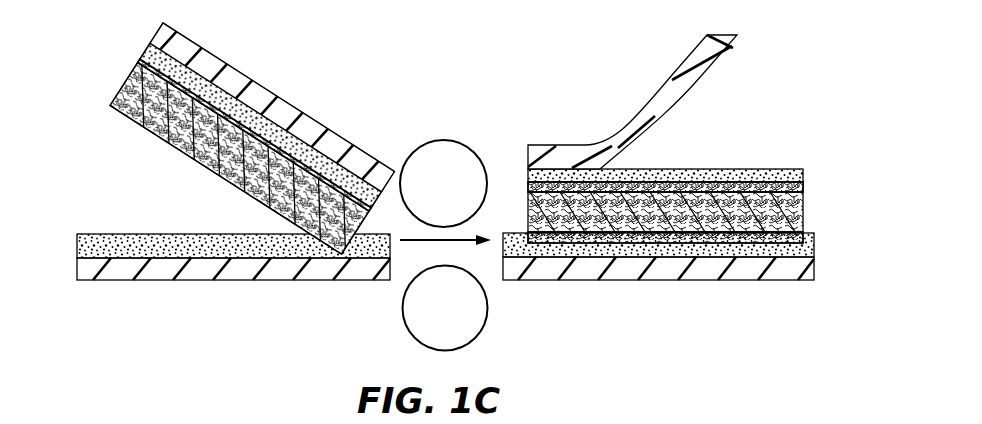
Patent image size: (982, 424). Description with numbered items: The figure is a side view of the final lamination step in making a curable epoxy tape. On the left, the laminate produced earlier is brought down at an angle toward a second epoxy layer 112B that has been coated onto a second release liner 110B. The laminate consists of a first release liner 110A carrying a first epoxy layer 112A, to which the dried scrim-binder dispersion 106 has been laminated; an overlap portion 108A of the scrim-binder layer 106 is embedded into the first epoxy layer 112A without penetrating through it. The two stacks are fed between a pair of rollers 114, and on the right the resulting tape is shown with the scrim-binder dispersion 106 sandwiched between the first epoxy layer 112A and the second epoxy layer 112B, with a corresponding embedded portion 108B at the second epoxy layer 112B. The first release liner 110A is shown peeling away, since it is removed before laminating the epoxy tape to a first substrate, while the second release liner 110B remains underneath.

The scrim-binder dispersion 106 is at (183, 140).
The overlap portion 108A is at (140, 64).
The second adhesive layer 108B is at (805, 238).
The first release liner 110A is at (250, 87).
The second release liner 110B is at (212, 267).
The first epoxy layer 112A is at (147, 53).
The second epoxy layer 112B is at (148, 233).
The laminating rollers 114 is at (445, 152).